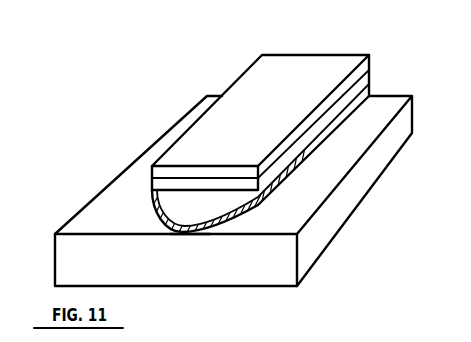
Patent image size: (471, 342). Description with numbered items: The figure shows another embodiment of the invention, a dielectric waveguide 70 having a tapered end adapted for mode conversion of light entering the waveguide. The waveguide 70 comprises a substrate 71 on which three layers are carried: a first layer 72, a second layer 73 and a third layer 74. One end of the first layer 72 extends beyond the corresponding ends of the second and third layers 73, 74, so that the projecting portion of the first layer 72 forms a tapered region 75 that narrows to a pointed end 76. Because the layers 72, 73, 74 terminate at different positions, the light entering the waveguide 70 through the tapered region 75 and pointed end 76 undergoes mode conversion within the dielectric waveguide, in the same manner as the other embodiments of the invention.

The waveguide 70 is at (131, 145).
The substrate 71 is at (304, 243).
The layer 72 is at (277, 183).
The layer 73 is at (295, 143).
The layer 74 is at (357, 70).
The tapered region 75 is at (205, 216).
The pointed end 76 is at (193, 234).